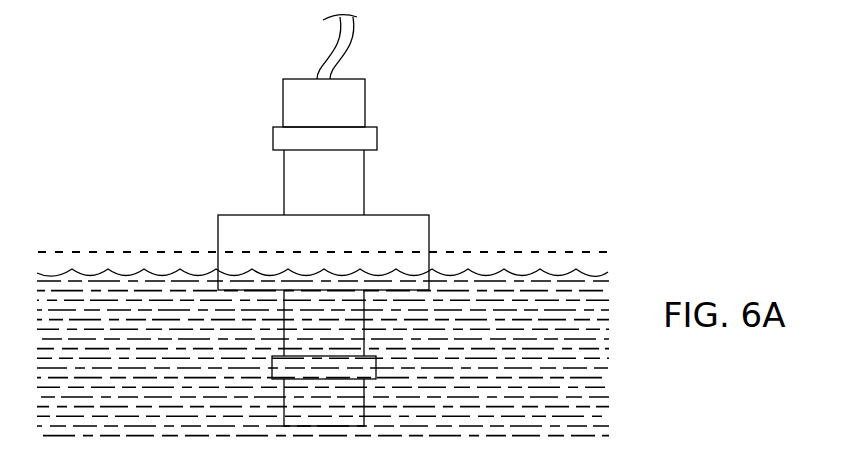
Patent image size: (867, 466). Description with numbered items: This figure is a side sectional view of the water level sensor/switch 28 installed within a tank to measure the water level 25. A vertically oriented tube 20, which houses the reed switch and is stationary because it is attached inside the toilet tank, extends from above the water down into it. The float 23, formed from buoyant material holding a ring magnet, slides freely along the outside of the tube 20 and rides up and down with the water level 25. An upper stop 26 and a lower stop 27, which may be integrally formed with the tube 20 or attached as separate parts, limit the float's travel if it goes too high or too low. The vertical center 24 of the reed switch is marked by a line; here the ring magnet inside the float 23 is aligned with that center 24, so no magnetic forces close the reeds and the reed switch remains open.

The tube 20 is at (370, 115).
The float 23 is at (348, 297).
The vertical center of the reed switch 24 is at (330, 228).
The water level 25 is at (323, 320).
The upper stop 26 is at (284, 126).
The lower stop 27 is at (254, 411).
The water level sensor/switch 28 is at (498, 117).